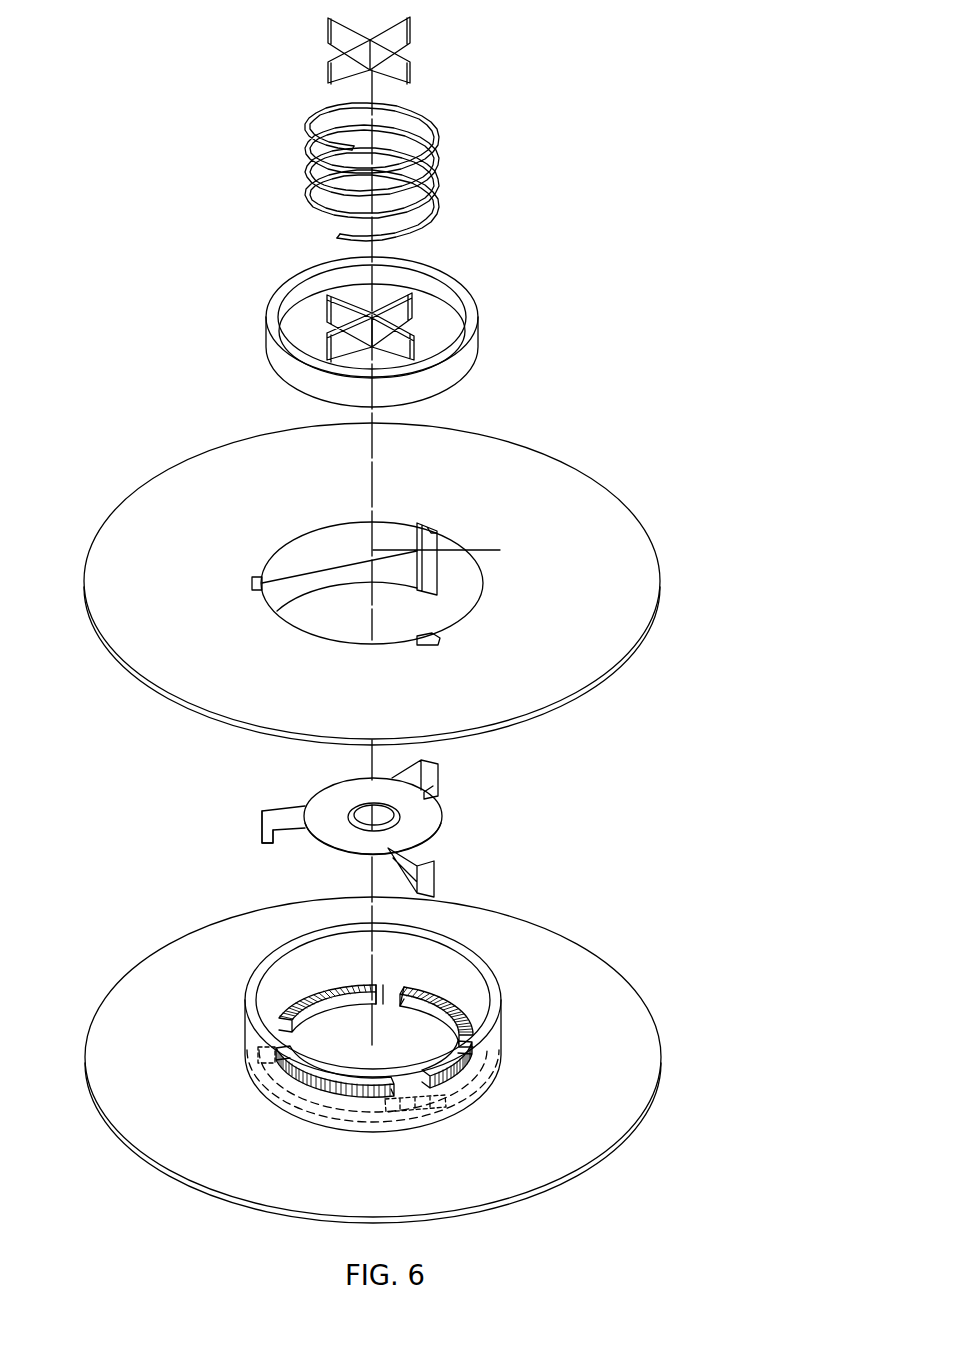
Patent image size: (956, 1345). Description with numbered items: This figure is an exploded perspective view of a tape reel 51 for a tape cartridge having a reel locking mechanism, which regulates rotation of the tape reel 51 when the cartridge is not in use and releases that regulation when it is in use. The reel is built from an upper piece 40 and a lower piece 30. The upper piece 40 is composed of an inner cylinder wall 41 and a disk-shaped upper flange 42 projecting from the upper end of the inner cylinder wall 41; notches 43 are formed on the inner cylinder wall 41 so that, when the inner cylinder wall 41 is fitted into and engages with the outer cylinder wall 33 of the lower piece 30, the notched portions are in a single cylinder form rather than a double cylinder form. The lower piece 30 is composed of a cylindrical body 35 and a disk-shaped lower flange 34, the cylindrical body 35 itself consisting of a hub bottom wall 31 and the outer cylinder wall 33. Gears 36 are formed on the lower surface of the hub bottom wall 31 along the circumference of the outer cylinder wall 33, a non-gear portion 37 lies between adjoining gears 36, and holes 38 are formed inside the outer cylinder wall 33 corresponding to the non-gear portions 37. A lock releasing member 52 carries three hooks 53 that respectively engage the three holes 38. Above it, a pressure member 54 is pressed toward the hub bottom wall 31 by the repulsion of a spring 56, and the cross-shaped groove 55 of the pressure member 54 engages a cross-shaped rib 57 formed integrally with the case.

The lower piece 30 is at (634, 1177).
The hub bottom wall 31 is at (423, 1003).
The outer cylinder wall 33 is at (500, 1030).
The lower flange 34 is at (610, 983).
The cylindrical body 35 is at (226, 1014).
The gear 36 is at (325, 983).
The non-gear portion 37 is at (405, 1017).
The hole 38 is at (407, 1040).
The upper piece 40 is at (526, 433).
The inner cylinder wall 41 is at (316, 550).
The upper flange 42 is at (203, 480).
The notch 43 is at (434, 634).
The tape reel 51 is at (98, 724).
The lock releasing member 52 is at (443, 808).
The hook 53 is at (262, 838).
The pressure member 54 is at (470, 346).
The cross-shaped groove 55 is at (398, 290).
The spring 56 is at (438, 173).
The cross-shaped rib 57 is at (414, 72).